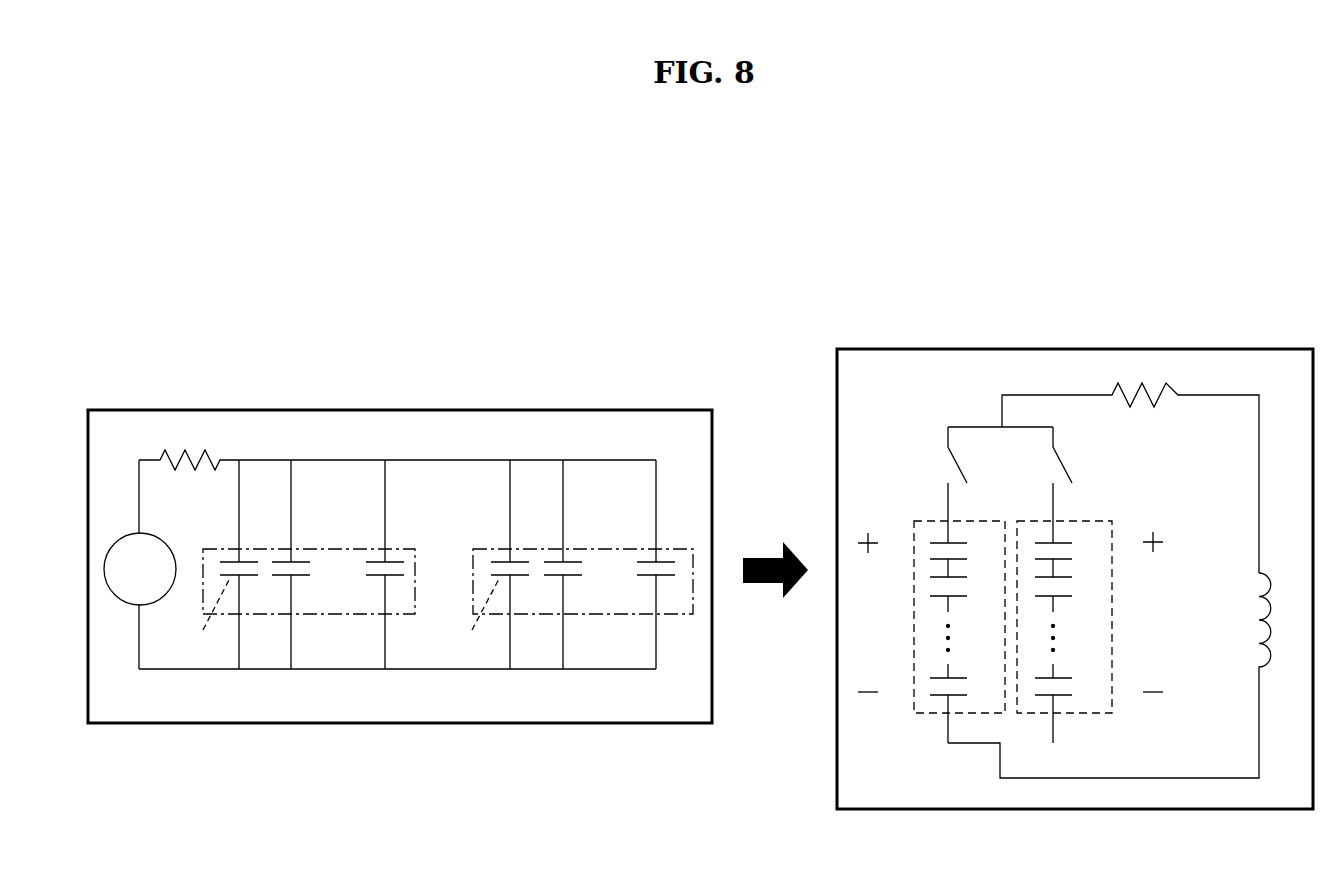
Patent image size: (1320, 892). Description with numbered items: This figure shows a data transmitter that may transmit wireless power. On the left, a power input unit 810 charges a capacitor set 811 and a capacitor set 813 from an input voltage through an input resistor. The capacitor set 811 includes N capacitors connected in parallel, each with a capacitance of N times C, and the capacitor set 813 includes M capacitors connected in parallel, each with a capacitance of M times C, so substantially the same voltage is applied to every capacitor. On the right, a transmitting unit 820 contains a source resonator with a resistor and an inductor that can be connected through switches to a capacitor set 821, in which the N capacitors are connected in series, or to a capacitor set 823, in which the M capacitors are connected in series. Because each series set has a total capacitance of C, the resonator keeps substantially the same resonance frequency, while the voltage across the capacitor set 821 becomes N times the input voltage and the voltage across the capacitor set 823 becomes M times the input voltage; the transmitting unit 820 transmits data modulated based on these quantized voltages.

The power input unit 810 is at (400, 524).
The capacitor set 811 is at (338, 547).
The capacitor set 813 is at (611, 547).
The transmitting unit 820 is at (1075, 537).
The capacitor set 821 is at (928, 520).
The capacitor set 823 is at (1072, 520).